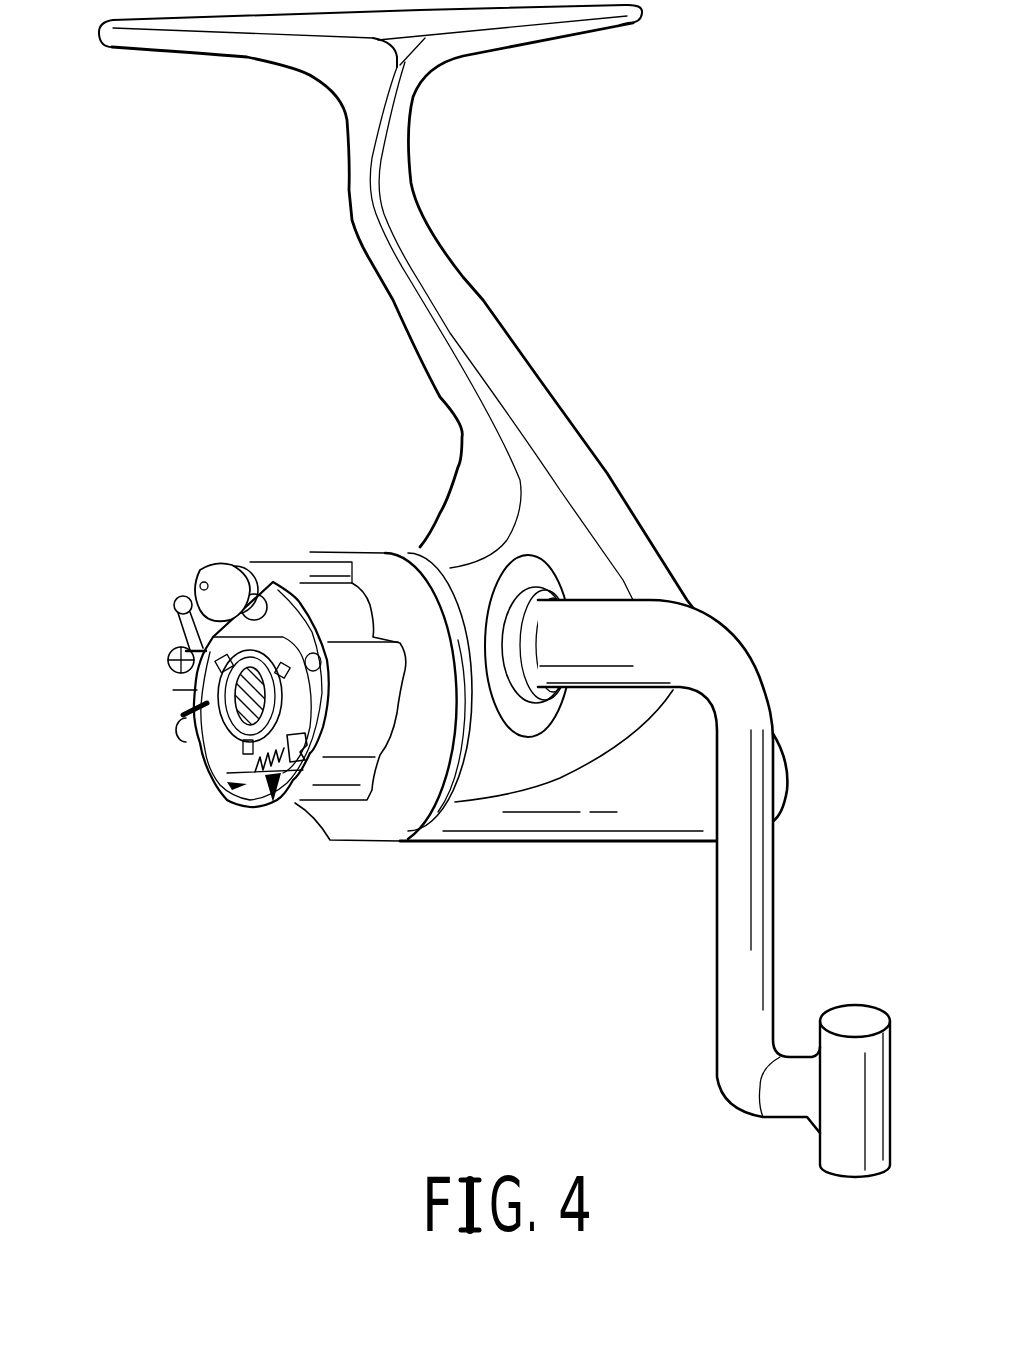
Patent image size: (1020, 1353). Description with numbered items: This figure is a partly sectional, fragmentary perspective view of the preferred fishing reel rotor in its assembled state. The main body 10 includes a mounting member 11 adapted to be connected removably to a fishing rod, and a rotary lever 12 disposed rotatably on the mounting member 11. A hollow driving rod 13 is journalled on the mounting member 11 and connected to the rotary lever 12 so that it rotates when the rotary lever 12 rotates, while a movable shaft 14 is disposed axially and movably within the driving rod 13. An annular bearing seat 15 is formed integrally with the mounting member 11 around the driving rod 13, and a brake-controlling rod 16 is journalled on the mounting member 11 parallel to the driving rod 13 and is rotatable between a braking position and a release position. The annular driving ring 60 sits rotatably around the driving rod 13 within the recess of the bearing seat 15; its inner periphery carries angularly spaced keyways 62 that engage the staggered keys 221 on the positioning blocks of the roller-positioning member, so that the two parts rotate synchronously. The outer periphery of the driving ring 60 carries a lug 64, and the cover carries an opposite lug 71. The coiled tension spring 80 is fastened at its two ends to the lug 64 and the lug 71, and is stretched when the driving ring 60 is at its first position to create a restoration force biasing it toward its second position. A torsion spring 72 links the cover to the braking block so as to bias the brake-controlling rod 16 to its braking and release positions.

The main body 10 is at (665, 508).
The mounting member 11 is at (470, 313).
The rotary lever 12 is at (758, 922).
The hollow driving rod 13 is at (207, 703).
The movable shaft 14 is at (237, 710).
The annular bearing seat 15 is at (340, 607).
The brake-controlling rod 16 is at (218, 577).
The keys 221 is at (225, 640).
The annular driving ring 60 is at (170, 720).
The keyways 62 is at (173, 690).
The lug 64 is at (232, 780).
The lug 71 is at (293, 780).
The torsion spring 72 is at (167, 597).
The coiled tension spring 80 is at (280, 785).